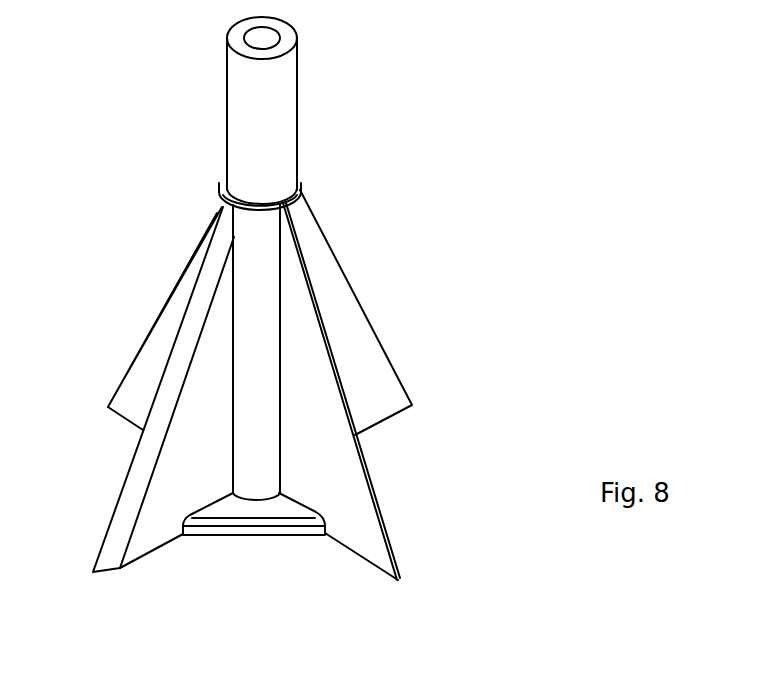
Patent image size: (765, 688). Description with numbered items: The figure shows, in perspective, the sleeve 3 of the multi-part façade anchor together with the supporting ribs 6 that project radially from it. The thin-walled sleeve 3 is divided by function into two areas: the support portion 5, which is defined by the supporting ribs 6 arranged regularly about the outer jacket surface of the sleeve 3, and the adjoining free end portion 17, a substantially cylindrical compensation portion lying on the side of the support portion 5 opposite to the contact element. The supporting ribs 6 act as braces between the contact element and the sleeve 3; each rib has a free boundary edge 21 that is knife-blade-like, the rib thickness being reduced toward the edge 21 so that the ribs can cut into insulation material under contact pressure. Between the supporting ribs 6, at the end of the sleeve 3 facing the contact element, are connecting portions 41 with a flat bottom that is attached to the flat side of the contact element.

The support portion 5 is at (482, 308).
The free end portion 17 is at (348, 97).
The sleeve 3 is at (262, 430).
The connecting portions 41 is at (252, 510).
The supporting ribs 6 is at (143, 377).
The free boundary edge 21 is at (120, 483).